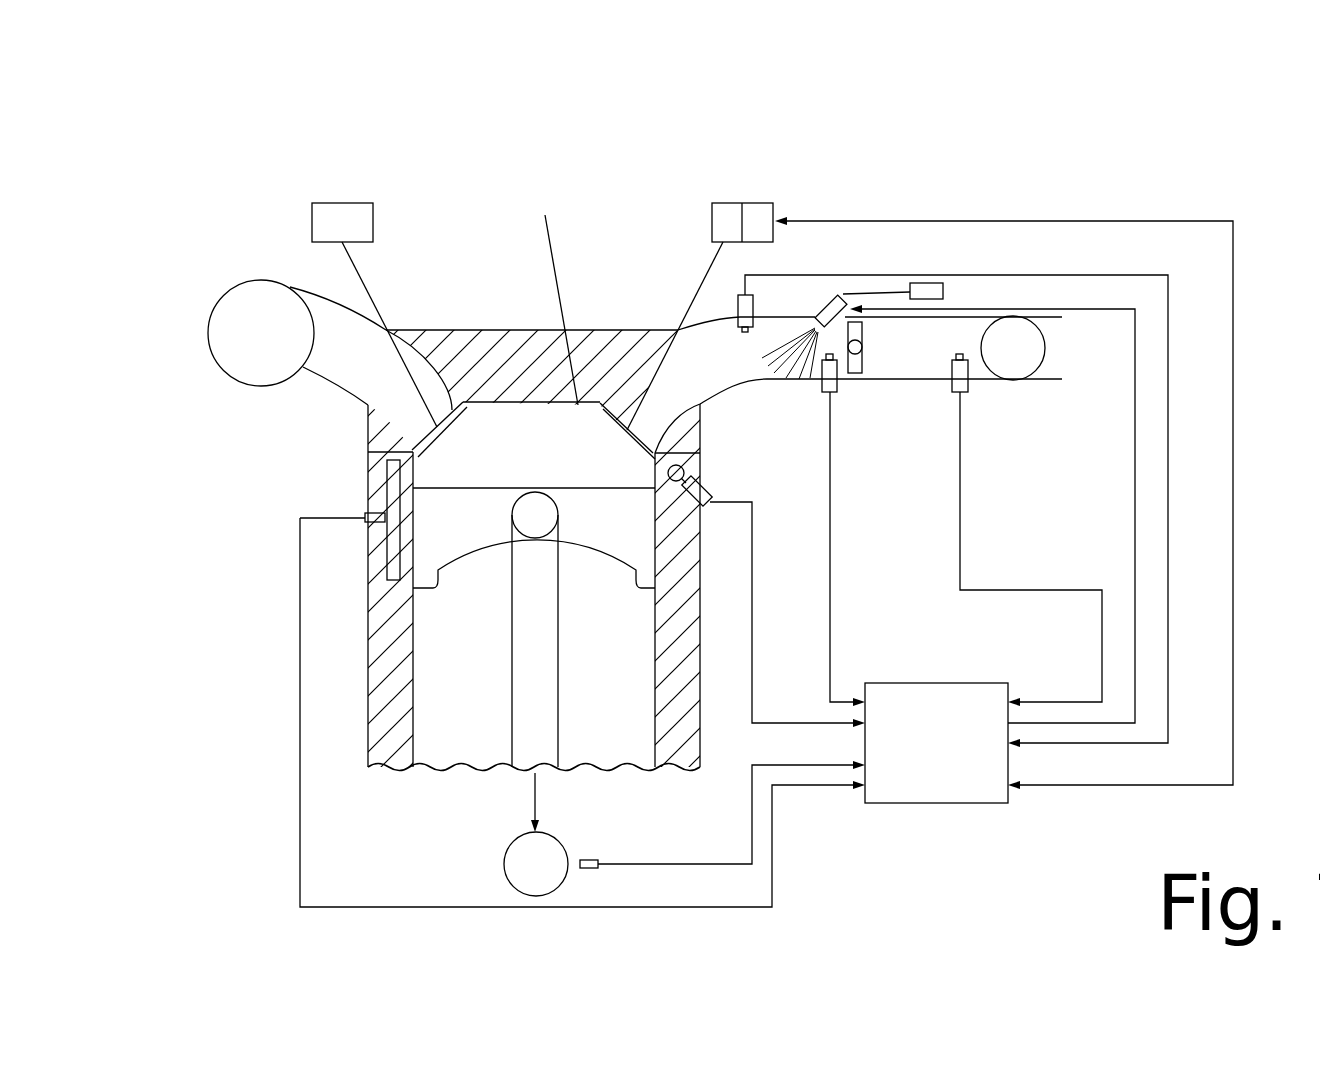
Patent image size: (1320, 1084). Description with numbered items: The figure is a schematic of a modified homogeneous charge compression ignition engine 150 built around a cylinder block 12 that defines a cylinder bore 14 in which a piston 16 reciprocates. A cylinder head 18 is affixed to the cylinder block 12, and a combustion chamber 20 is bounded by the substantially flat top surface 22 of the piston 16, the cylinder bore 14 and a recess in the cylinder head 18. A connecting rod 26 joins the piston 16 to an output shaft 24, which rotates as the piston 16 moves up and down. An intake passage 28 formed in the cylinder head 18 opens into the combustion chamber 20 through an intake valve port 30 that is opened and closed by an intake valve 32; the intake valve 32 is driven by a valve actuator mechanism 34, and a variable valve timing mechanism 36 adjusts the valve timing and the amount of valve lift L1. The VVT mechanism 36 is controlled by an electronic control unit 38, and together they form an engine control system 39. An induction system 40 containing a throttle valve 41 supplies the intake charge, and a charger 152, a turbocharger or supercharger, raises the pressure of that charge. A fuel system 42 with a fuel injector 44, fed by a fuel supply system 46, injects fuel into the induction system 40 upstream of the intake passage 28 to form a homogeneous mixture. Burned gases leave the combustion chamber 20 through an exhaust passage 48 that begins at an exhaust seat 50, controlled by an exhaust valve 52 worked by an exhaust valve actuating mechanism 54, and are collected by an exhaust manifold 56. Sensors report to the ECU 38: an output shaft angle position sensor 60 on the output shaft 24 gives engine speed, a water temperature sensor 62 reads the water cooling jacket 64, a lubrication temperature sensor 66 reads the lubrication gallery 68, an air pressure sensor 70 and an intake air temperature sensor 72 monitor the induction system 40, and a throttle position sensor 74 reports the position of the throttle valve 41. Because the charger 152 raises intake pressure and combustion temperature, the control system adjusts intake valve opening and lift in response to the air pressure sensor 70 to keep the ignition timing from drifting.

The cylinder block 12 is at (383, 680).
The cylinder bore 14 is at (413, 653).
The piston 16 is at (435, 542).
The cylinder head 18 is at (453, 330).
The combustion chamber 20 is at (500, 452).
The top surface 22 is at (533, 490).
The output shaft 24 is at (504, 864).
The connecting rod 26 is at (558, 640).
The intake passage 28 is at (627, 407).
The intake valve port 30 is at (628, 427).
The intake valve 32 is at (684, 312).
The valve actuator mechanism 34 is at (711, 178).
The variable valve timing mechanism 36 is at (987, 496).
The electronic control unit 38 is at (937, 805).
The engine control system 39 is at (1007, 884).
The induction system 40 is at (890, 405).
The throttle valve 41 is at (862, 345).
The fuel system 42 is at (863, 268).
The fuel injector 44 is at (829, 303).
The fuel supply system 46 is at (943, 291).
The exhaust passage 48 is at (370, 378).
The exhaust seat 50 is at (413, 343).
The exhaust valve 52 is at (367, 290).
The exhaust valve actuating mechanism 54 is at (312, 222).
The exhaust manifold 56 is at (206, 275).
The output shaft angle position sensor 60 is at (585, 873).
The water temperature sensor 62 is at (370, 510).
The water cooling jacket 64 is at (393, 480).
The lubrication temperature sensor 66 is at (707, 495).
The lubrication gallery 68 is at (682, 465).
The air pressure sensor 70 is at (818, 384).
The intake air temperature sensor 72 is at (753, 312).
The throttle position sensor 74 is at (968, 387).
The homogeneous charge compression engine 150 is at (250, 457).
The charger 152 is at (1017, 405).
The valve lift L1 is at (553, 296).